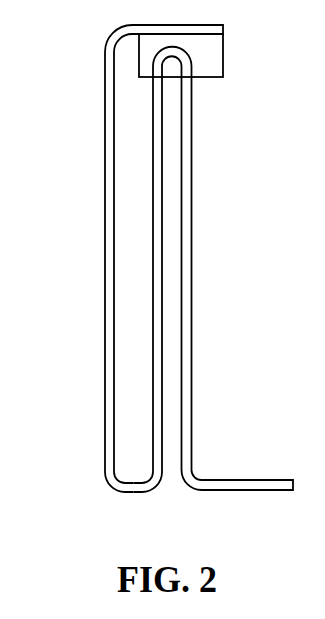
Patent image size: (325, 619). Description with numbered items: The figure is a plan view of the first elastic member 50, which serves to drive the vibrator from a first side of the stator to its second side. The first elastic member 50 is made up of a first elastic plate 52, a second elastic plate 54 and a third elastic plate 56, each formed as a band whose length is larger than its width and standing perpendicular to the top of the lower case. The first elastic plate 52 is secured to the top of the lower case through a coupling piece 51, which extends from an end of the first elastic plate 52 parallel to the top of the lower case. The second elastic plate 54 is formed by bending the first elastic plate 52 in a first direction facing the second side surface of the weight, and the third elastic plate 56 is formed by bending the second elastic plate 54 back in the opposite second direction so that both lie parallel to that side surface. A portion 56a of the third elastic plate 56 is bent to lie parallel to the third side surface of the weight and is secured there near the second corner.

The first elastic member 50 is at (164, 258).
The coupling piece 51 is at (217, 47).
The first elastic plate 52 is at (110, 297).
The second elastic plate 54 is at (153, 343).
The third elastic plate 56 is at (188, 328).
The end foot portion 56a is at (263, 481).